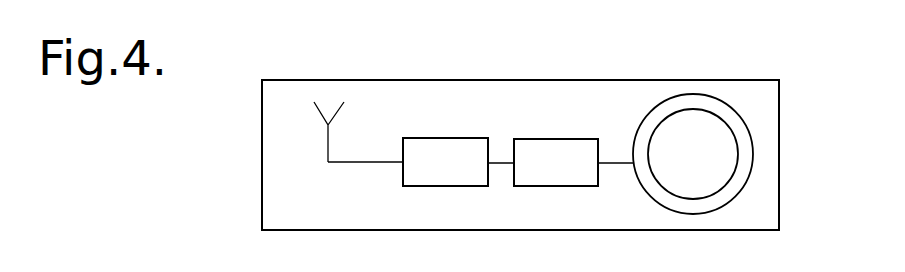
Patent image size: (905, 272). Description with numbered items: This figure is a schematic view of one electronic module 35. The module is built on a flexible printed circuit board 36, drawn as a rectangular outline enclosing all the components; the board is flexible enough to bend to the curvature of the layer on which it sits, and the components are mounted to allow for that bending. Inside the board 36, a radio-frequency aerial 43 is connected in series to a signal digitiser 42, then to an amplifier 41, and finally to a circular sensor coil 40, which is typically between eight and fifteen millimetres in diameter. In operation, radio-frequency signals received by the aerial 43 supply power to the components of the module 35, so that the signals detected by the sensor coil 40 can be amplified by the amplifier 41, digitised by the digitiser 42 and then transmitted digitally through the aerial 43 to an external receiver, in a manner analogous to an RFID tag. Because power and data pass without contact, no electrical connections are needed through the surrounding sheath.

The electronic module 35 is at (778, 57).
The flexible printed circuit board 36 is at (528, 99).
The circular sensor coil 40 is at (690, 211).
The amplifier 41 is at (558, 174).
The signal digitiser 42 is at (447, 172).
The radio-frequency aerial 43 is at (333, 143).